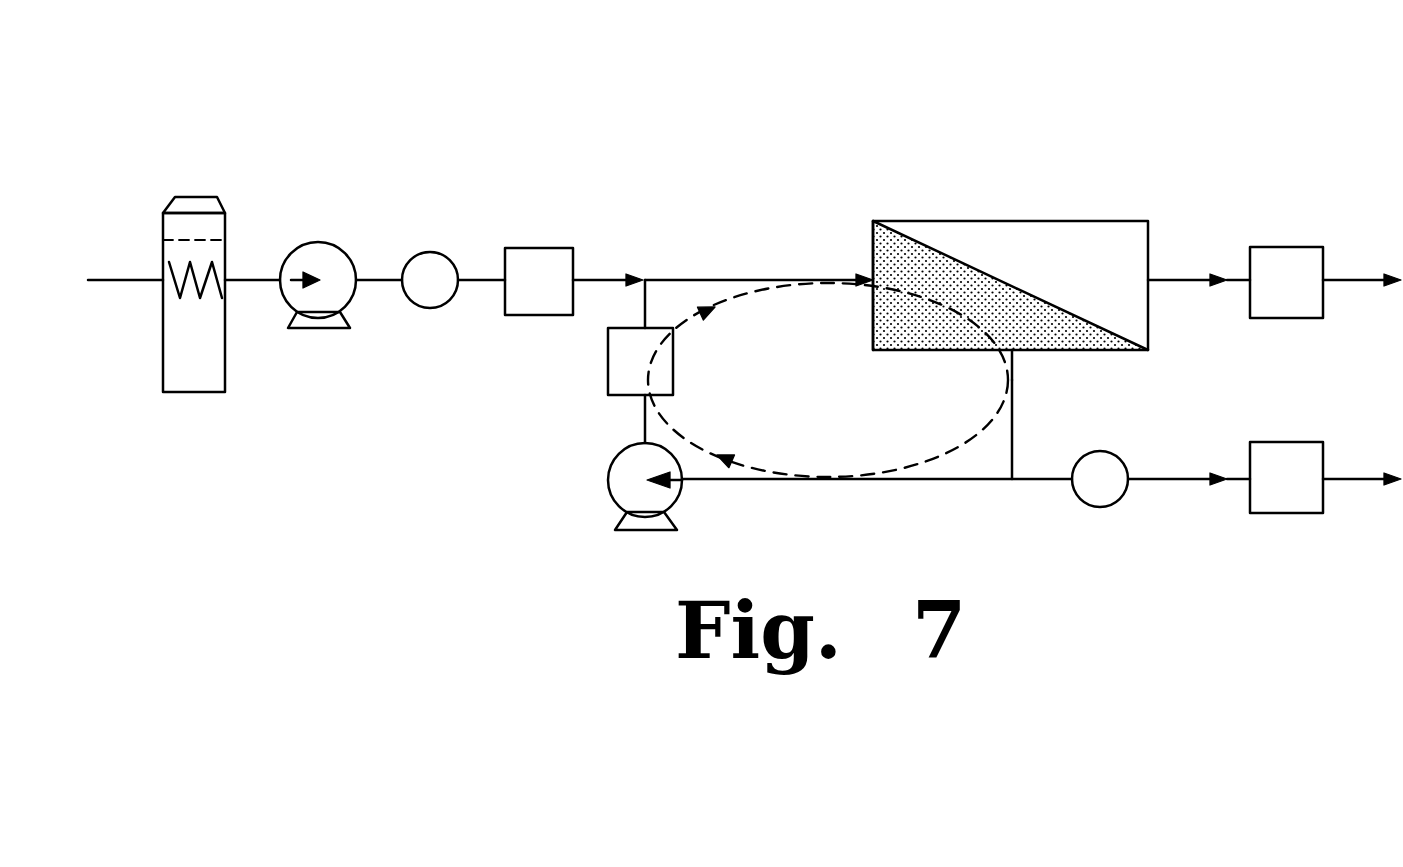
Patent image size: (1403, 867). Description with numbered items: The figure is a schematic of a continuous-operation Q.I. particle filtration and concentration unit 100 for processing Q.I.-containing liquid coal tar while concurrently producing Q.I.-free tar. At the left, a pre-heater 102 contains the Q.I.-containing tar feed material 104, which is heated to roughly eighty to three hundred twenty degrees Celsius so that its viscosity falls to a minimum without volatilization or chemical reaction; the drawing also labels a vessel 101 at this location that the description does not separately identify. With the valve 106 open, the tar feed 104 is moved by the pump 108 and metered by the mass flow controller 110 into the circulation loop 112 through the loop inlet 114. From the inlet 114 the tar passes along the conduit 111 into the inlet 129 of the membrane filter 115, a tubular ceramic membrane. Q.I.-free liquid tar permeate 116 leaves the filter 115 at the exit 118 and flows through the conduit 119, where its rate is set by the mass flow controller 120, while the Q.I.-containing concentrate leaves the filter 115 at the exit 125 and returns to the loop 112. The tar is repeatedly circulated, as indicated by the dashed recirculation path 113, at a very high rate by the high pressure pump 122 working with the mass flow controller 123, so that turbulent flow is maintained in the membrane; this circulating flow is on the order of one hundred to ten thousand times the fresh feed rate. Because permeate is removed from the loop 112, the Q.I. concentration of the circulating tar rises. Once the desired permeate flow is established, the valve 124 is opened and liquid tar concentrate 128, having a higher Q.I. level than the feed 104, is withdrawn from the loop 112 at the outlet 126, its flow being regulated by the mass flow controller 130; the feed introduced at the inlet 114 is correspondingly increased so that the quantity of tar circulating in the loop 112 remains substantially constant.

The continuous-operation Q.I. particle filtration and concentration unit 100 is at (893, 155).
The feed tank 101 is at (187, 347).
The pre-heater 102 is at (230, 210).
The Q.I. containing tar feed material 104 is at (218, 257).
The valve 106 is at (412, 253).
The pump 108 is at (285, 307).
The mass flow controller 110 is at (505, 298).
The conduit 111 is at (727, 278).
The circulation loop 112 is at (865, 414).
The recirculation flow 113 is at (718, 310).
The loop inlet 114 is at (645, 280).
The membrane filter 115 is at (1092, 221).
The Q.I. free liquid tar permeate 116 is at (1202, 290).
The permeate exit 118 is at (1153, 277).
The conduit 119 is at (1238, 285).
The mass flow controller 120 is at (1273, 247).
The high pressure pump 122 is at (608, 485).
The mass flow controller 123 is at (608, 368).
The valve 124 is at (1123, 457).
The concentrate exit 125 is at (1012, 352).
The outlet 126 is at (1013, 485).
The liquid tar concentrate 128 is at (1232, 495).
The filter inlet 129 is at (870, 262).
The mass flow controller 130 is at (1328, 500).